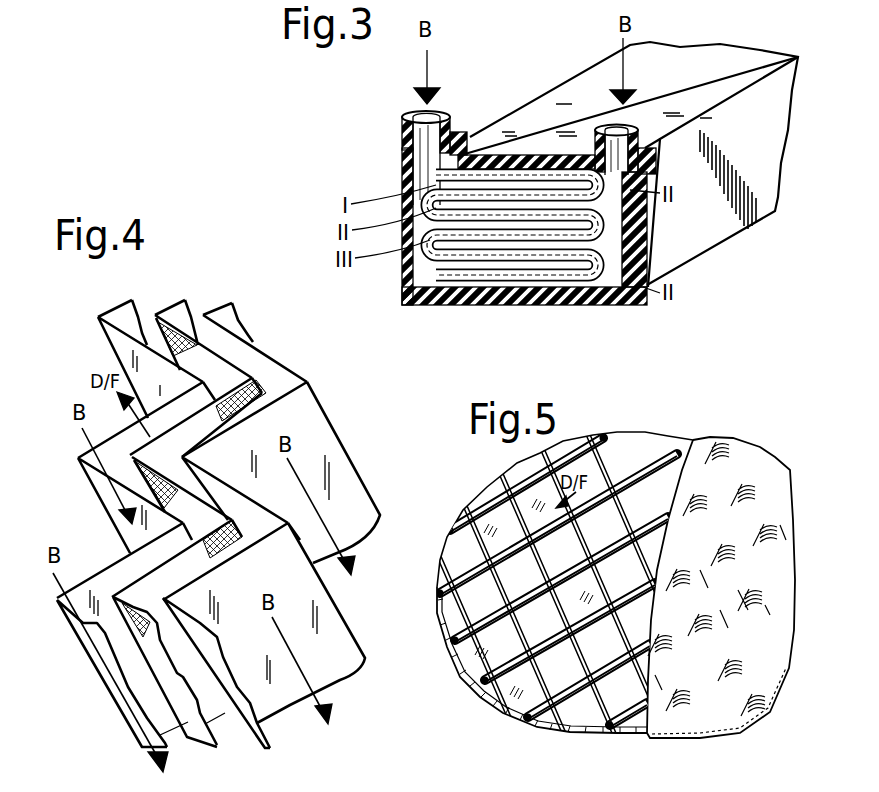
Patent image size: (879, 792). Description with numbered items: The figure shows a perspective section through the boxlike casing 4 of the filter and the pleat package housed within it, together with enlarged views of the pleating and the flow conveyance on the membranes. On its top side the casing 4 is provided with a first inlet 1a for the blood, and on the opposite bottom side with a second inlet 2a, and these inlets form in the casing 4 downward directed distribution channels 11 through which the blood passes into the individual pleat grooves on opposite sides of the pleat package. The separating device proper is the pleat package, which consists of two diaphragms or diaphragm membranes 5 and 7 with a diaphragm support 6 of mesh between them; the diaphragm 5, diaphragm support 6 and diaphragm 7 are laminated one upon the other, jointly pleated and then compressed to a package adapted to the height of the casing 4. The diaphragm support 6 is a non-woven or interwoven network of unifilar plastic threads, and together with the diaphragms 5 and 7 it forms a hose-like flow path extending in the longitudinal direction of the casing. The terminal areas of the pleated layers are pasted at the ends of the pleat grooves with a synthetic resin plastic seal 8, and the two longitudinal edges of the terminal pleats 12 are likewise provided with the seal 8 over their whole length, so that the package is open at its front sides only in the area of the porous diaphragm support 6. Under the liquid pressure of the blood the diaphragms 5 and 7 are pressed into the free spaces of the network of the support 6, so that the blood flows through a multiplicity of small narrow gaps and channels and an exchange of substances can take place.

In FIG. 3, the first inlet 1a is at (405, 140).
In FIG. 3, the second inlet 2a is at (643, 137).
In FIG. 3, the boxlike casing 4 is at (490, 305).
In FIG. 3, the diaphragm 5 is at (490, 172).
In FIG. 4, the diaphragm 5 is at (222, 303).
In FIG. 5, the diaphragm 5 is at (740, 467).
In FIG. 3, the diaphragm support 6 is at (522, 186).
In FIG. 4, the diaphragm support 6 is at (172, 302).
In FIG. 5, the diaphragm support 6 is at (653, 452).
In FIG. 3, the diaphragm 7 is at (555, 200).
In FIG. 4, the diaphragm 7 is at (133, 306).
In FIG. 5, the diaphragm 7 is at (613, 462).
In FIG. 3, the synthetic resin plastic seal 8 is at (578, 198).
In FIG. 3, the distribution channels 11 is at (424, 274).
In FIG. 3, the terminal pleats 12 is at (447, 182).